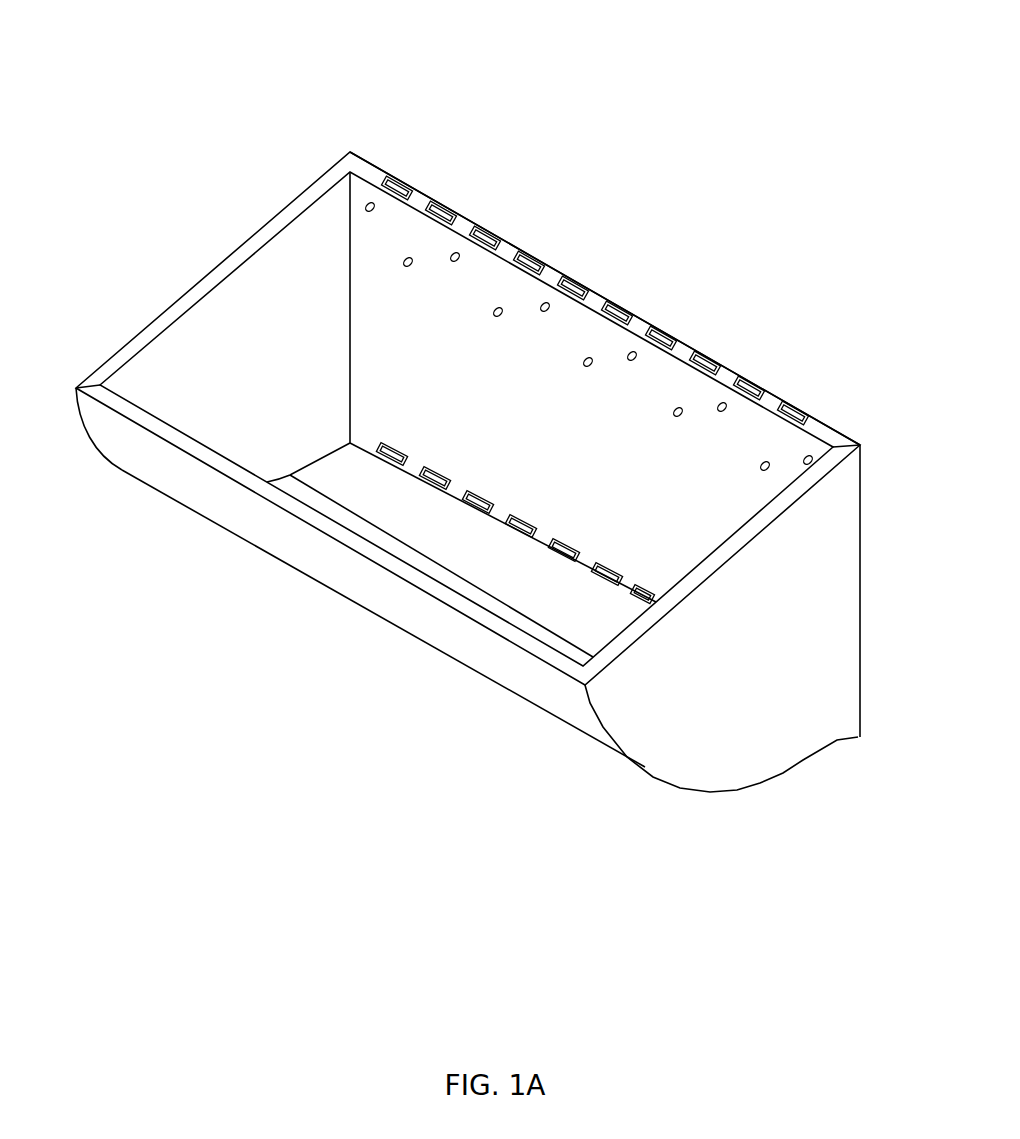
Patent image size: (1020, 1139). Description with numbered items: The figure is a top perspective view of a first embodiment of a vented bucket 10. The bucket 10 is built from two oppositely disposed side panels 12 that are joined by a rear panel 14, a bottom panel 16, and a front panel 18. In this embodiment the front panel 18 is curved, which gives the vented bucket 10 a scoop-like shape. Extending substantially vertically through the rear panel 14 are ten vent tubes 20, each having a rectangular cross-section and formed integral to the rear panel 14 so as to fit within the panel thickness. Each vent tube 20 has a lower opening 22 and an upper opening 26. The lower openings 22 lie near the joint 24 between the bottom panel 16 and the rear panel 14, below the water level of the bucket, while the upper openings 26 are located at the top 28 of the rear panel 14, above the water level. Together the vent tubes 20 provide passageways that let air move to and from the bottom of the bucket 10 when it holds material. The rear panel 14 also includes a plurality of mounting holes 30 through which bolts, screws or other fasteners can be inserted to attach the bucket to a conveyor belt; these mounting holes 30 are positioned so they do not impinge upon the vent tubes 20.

The vented bucket 10 is at (224, 145).
The side panel 12 is at (140, 338).
The rear panel 14 is at (600, 297).
The bottom panel 16 is at (335, 480).
The front panel 18 is at (402, 612).
The vent tube 20 is at (443, 203).
The lower opening 22 is at (597, 585).
The joint 24 is at (448, 497).
The upper opening 26 is at (705, 358).
The top 28 is at (550, 277).
The mounting hole 30 is at (371, 202).